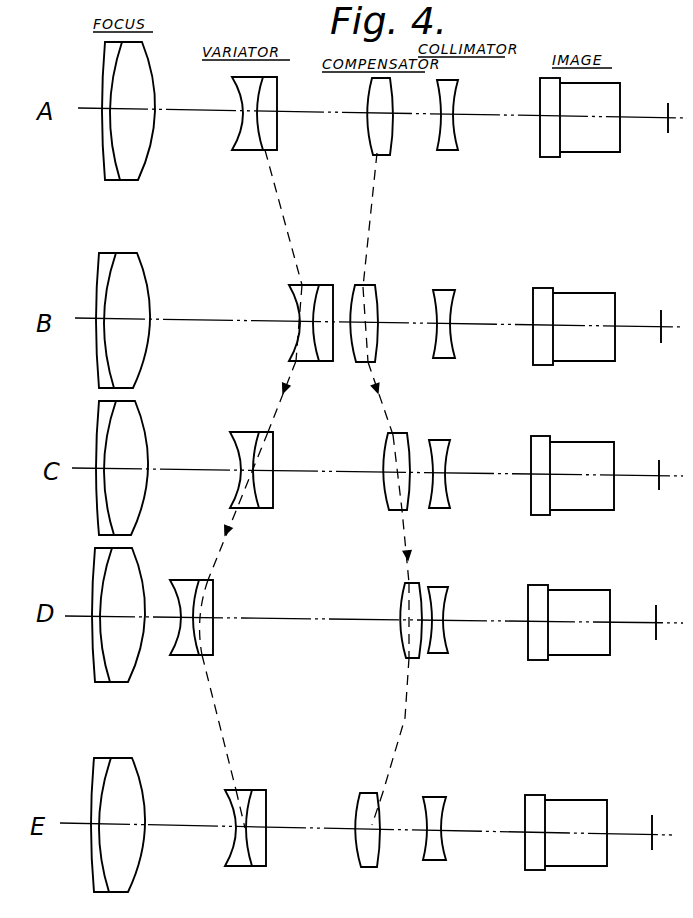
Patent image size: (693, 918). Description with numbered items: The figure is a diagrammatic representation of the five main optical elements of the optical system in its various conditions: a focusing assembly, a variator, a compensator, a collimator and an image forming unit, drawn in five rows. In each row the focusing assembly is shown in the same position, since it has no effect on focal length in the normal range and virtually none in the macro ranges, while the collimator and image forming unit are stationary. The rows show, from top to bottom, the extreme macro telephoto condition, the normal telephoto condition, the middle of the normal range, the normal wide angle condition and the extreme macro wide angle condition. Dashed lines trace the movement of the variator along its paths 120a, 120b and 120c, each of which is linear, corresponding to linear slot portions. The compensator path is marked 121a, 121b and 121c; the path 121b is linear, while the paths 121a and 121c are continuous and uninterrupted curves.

The variator path 120a is at (288, 378).
The variator path 120b is at (278, 207).
The variator path 120c is at (221, 720).
The compensator path 121a is at (385, 408).
The compensator path 121b is at (372, 206).
The compensator path 121c is at (405, 720).